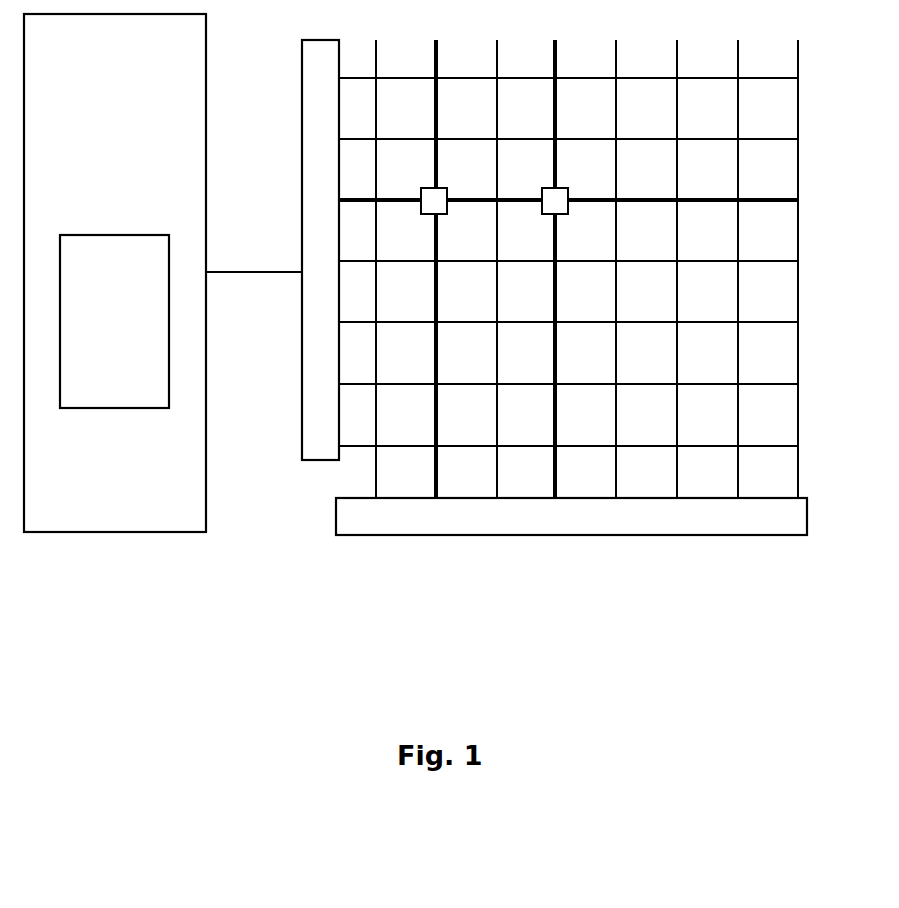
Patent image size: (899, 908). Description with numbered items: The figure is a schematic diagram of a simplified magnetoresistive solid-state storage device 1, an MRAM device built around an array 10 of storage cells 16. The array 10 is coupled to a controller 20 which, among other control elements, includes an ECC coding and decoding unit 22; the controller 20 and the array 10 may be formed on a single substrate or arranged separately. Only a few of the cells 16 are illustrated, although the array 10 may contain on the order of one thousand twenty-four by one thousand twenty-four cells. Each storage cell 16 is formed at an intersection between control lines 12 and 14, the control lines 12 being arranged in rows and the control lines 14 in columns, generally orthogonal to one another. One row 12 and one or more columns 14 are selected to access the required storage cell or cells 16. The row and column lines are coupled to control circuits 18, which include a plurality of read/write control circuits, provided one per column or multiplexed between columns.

The magnetoresistive solid-state storage device 1 is at (192, 584).
The array 10 is at (573, 319).
The control lines 12 is at (700, 200).
The control lines 14 is at (555, 42).
The storage cells 16 is at (441, 187).
The control circuits 18 is at (795, 528).
The controller 20 is at (194, 152).
The ECC coding and decoding unit 22 is at (170, 355).